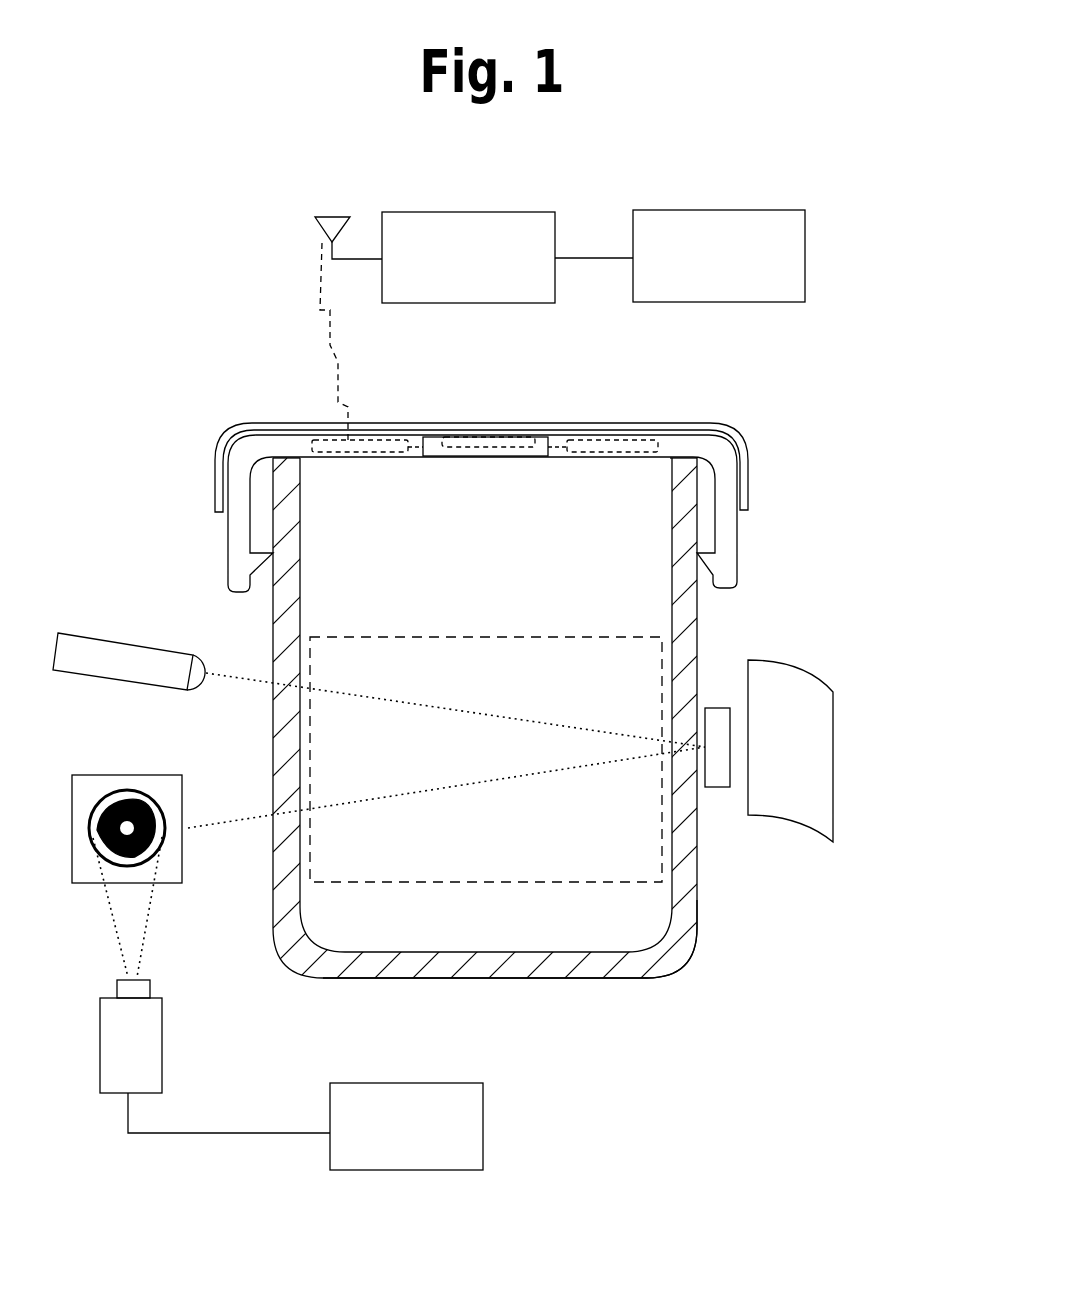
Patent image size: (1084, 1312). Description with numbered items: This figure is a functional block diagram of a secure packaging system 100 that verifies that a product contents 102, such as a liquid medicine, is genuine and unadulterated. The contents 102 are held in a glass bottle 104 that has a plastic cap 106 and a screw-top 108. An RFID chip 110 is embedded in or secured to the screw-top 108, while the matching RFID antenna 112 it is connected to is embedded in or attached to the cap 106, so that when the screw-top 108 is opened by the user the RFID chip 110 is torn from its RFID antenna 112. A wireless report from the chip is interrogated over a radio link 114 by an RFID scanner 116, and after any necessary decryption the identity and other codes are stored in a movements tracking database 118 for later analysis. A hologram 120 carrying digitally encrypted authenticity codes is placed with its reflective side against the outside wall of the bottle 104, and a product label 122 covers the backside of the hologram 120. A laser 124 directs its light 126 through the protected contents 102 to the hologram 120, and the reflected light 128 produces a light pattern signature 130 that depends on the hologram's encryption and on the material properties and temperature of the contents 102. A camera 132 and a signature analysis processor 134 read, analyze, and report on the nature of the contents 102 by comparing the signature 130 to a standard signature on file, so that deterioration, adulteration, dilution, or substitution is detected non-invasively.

The secure packing system 100 is at (130, 247).
The product contents 102 is at (492, 852).
The glass bottle 104 is at (700, 922).
The plastic cap 106 is at (228, 581).
The screw-top 108 is at (218, 451).
The RFID chip 110 is at (463, 445).
The RFID antenna 112 is at (395, 440).
The radio link 114 is at (327, 352).
The RFID scanner 116 is at (438, 212).
The movements tracking database 118 is at (672, 210).
The hologram 120 is at (715, 708).
The product label 122 is at (835, 700).
The laser 124 is at (140, 685).
The light 126 is at (348, 697).
The reflected light 128 is at (413, 793).
The light pattern signature 130 is at (185, 862).
The camera 132 is at (160, 1067).
The signature analysis processor 134 is at (420, 1083).